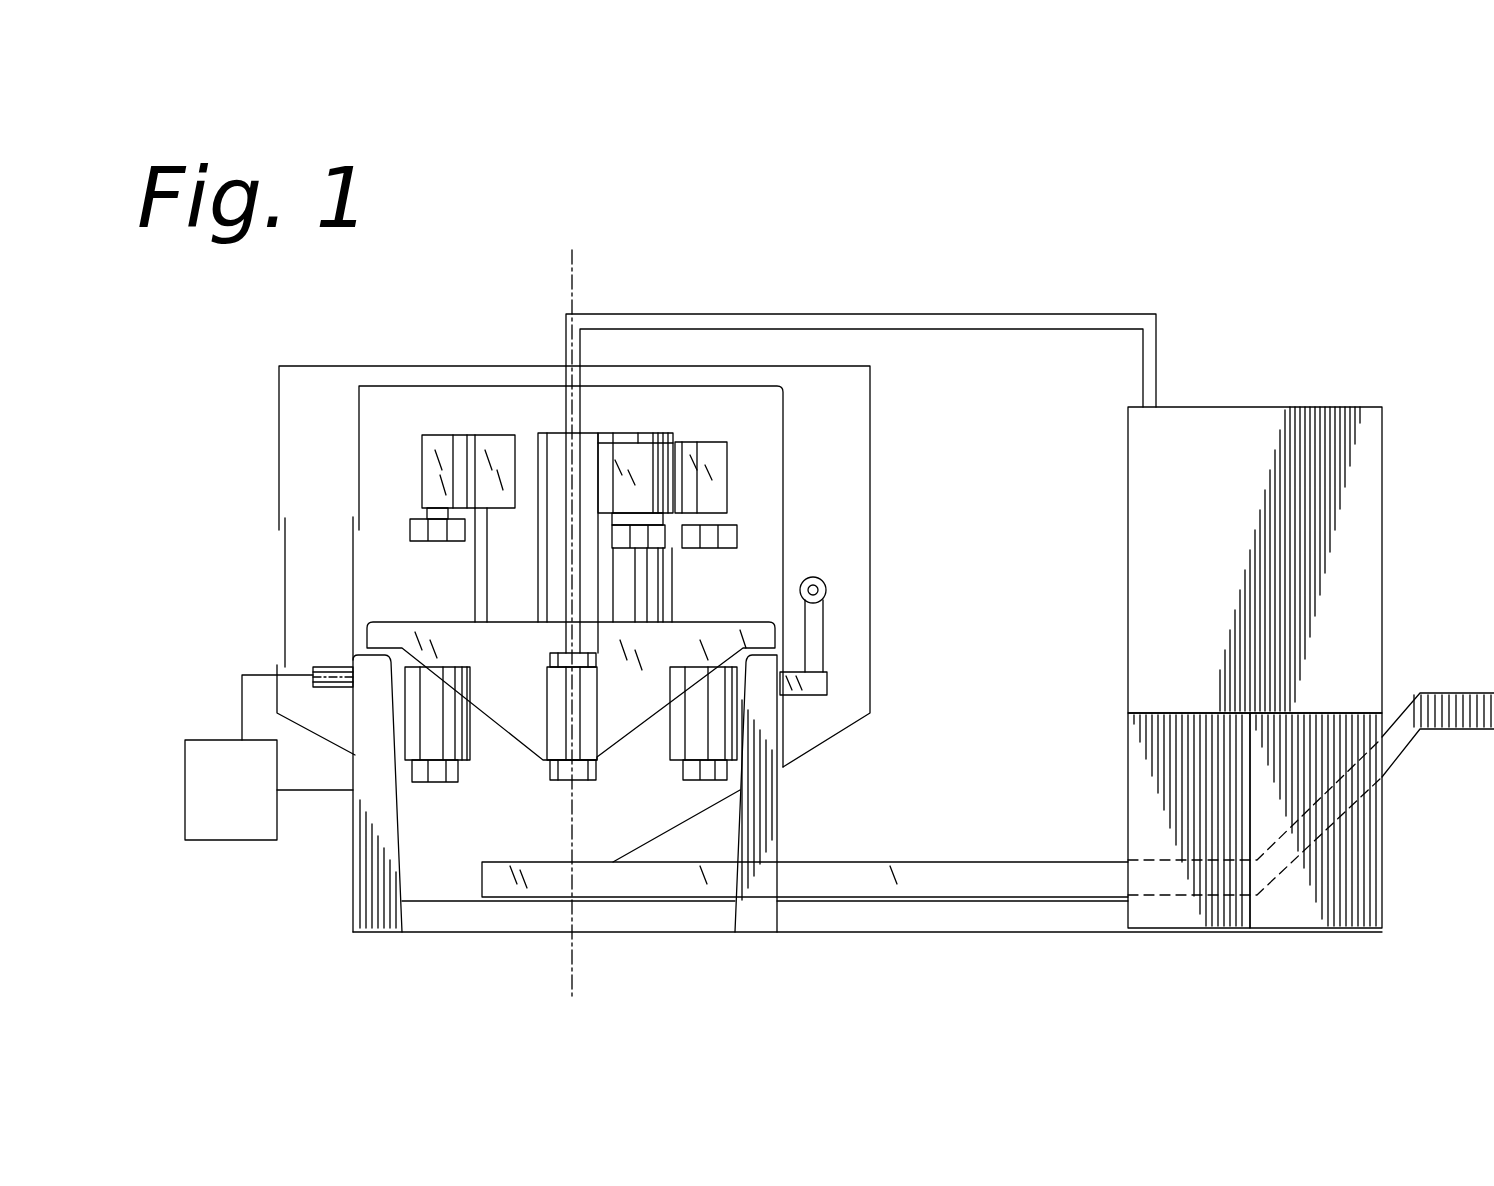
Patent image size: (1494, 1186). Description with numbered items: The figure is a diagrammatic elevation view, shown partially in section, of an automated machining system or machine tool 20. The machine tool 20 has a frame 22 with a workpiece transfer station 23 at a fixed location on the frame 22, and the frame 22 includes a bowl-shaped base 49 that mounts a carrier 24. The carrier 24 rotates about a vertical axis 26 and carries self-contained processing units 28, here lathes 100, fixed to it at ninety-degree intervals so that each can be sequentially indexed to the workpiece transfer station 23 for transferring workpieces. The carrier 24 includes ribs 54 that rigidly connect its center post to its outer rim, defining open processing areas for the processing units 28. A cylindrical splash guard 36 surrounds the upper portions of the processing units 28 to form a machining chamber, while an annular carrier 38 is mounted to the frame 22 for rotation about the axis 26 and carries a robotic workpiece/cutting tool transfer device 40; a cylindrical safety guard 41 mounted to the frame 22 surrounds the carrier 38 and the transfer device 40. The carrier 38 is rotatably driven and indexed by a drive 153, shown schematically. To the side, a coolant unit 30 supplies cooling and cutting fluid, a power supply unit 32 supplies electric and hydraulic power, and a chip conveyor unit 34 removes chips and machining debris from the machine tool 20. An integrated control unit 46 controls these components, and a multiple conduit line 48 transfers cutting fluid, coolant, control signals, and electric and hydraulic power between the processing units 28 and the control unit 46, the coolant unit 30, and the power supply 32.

The machine tool 20 is at (876, 240).
The frame 22 is at (858, 930).
The workpiece transfer station 23 is at (333, 625).
The carrier 24 is at (723, 620).
The vertical axis 26 is at (577, 283).
The processing units 28 is at (488, 435).
The coolant unit 30 is at (1292, 917).
The power supply unit 32 is at (1163, 910).
The chip conveyor unit 34 is at (1462, 728).
The splash guard 36 is at (420, 386).
The carrier 38 is at (820, 680).
The workpiece/cutting tool transfer device 40 is at (827, 609).
The safety guard 41 is at (358, 366).
The control unit 46 is at (1245, 417).
The multiple conduit line 48 is at (1005, 314).
The base 49 is at (375, 923).
The ribs 54 is at (471, 673).
The lathes 100 is at (420, 462).
The drive 153 is at (269, 757).